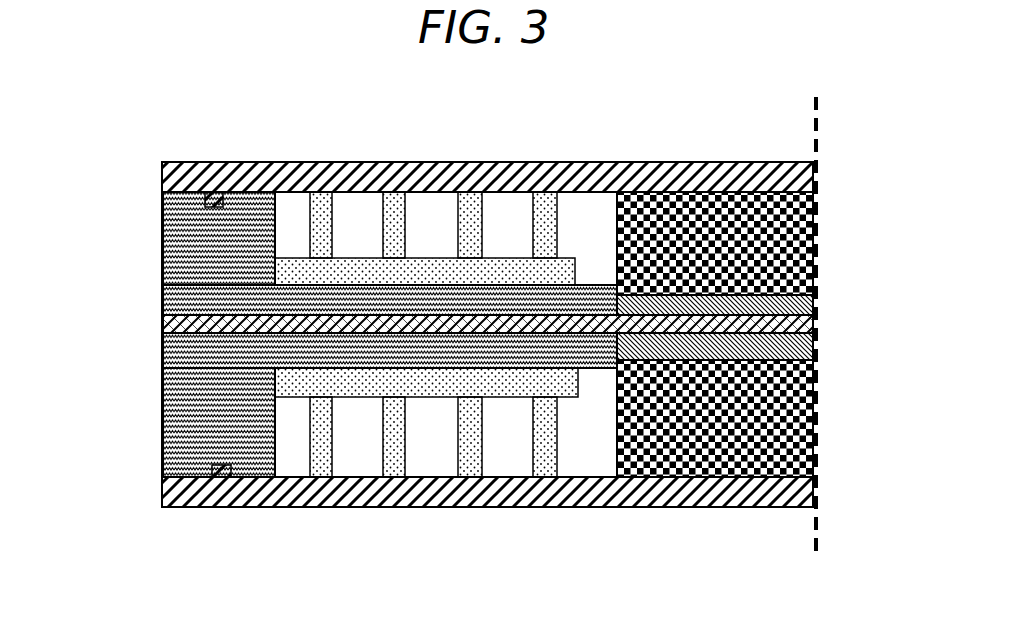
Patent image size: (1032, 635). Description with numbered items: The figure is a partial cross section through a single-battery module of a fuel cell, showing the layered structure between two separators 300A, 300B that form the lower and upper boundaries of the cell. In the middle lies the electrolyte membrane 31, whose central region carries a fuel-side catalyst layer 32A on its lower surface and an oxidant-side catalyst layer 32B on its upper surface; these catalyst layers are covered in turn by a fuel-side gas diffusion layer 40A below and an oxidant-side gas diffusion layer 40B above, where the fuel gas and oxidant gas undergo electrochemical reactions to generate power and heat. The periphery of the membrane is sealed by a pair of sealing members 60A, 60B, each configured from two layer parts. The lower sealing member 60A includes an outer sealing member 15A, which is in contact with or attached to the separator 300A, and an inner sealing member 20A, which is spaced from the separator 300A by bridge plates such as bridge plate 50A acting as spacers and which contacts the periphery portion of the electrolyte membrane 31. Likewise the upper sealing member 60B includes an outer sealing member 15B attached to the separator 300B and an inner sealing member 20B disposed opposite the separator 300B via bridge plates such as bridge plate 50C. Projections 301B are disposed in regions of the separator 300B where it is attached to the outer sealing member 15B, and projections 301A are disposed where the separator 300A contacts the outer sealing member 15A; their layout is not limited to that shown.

The separator 300A is at (428, 490).
The separator 300B is at (493, 178).
The projections 301A is at (213, 478).
The projections 301B is at (247, 162).
The bridge plate 50A is at (538, 462).
The bridge plate 50C is at (555, 205).
The fuel-side gas diffusion layer 40A is at (805, 430).
The oxidant-side gas diffusion layer 40B is at (805, 215).
The fuel-side catalyst layer 32A is at (808, 350).
The oxidant-side catalyst layer 32B is at (805, 290).
The electrolyte membrane 31 is at (808, 320).
The inner sealing member 20A is at (195, 357).
The inner sealing member 20B is at (163, 288).
The outer sealing member 15A is at (180, 438).
The outer sealing member 15B is at (178, 265).
The sealing member 60A is at (318, 458).
The sealing member 60B is at (318, 216).